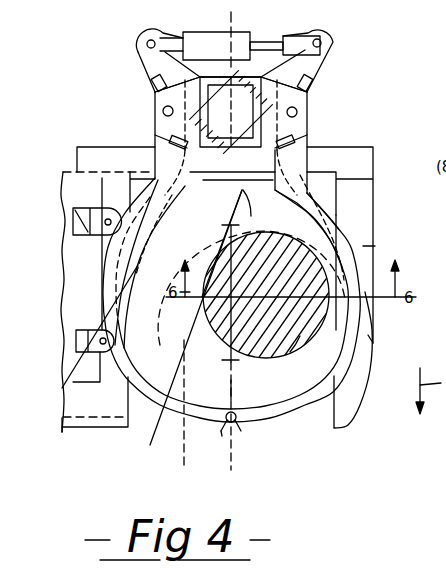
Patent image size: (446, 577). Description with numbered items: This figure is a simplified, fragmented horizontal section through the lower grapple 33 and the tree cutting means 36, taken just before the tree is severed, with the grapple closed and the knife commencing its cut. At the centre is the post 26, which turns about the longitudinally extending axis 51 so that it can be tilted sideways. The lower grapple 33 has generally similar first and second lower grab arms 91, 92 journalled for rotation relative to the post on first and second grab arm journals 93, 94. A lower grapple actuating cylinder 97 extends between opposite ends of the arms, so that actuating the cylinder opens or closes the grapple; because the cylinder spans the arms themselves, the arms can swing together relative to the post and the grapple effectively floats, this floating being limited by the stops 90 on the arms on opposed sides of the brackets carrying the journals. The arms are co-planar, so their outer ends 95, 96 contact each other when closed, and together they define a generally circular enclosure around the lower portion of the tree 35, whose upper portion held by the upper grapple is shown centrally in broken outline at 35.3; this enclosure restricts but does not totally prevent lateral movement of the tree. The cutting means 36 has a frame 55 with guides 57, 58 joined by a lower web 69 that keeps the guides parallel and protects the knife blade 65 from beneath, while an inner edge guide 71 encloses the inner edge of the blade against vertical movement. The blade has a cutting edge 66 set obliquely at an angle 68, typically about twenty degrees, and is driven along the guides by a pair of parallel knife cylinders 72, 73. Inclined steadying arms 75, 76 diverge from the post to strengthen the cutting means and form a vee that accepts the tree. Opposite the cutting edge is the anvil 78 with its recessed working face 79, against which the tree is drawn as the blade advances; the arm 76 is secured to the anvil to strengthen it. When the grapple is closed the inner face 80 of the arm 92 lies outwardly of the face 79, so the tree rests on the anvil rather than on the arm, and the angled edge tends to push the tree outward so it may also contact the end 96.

The post 26 is at (326, 49).
The lower grapple 33 is at (328, 119).
The tree 35 is at (268, 356).
The upper portion of tree 35.3 is at (185, 346).
The tree cutting means 36 is at (285, 434).
The longitudinally extending axis 51 is at (231, 395).
The frame 55 is at (64, 429).
The guide 57 is at (85, 151).
The guide 58 is at (86, 402).
The knife blade 65 is at (143, 407).
The cutting edge 66 is at (231, 225).
The angle 68 is at (180, 456).
The lower web 69 is at (72, 254).
The inner edge guide 71 is at (257, 205).
The knife cylinder 72 is at (75, 208).
The knife cylinder 73 is at (74, 338).
The inclined steadying arm 75 is at (95, 328).
The inclined steadying arm 76 is at (366, 337).
The anvil 78 is at (375, 247).
The recessed working face 79 is at (334, 424).
The inner face 80 is at (302, 356).
The stops 90 is at (150, 73).
The first lower grab arm 91 is at (131, 266).
The second lower grab arm 92 is at (340, 229).
The first grab arm journal 93 is at (162, 108).
The second grab arm journal 94 is at (298, 110).
The outer end of first grab arm 95 is at (240, 430).
The outer end of second grab arm 96 is at (221, 432).
The lower grapple actuating cylinder 97 is at (225, 56).